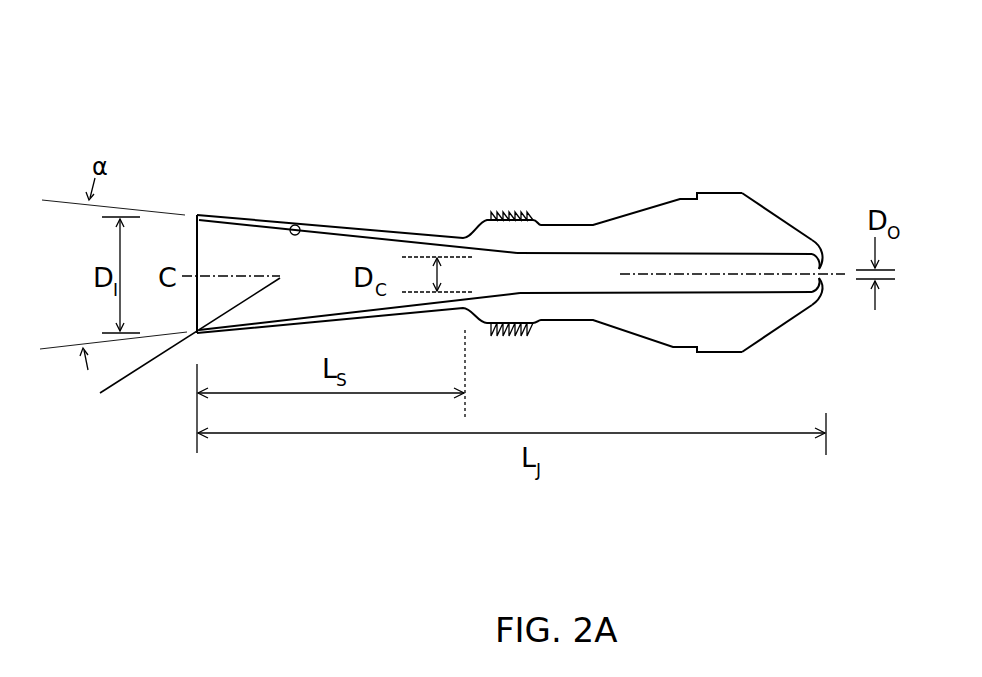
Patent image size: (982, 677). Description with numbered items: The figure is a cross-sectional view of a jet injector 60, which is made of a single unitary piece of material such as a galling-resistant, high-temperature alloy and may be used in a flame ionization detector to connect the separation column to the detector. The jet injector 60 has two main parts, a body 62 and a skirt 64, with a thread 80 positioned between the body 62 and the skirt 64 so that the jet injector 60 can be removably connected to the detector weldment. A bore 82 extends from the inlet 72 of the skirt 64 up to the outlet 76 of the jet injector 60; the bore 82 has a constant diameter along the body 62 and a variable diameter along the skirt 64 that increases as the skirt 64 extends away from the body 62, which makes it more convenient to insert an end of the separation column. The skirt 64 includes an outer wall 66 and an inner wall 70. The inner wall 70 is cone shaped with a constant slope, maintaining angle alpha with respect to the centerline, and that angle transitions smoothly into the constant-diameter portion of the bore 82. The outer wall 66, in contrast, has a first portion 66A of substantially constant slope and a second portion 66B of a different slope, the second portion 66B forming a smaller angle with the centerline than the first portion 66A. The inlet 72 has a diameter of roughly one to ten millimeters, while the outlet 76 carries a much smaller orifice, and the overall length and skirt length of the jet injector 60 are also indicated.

The jet injector 60 is at (702, 169).
The body 62 is at (758, 200).
The skirt 64 is at (398, 164).
The outer wall 66 is at (350, 205).
The first portion 66A is at (400, 228).
The second portion 66B is at (227, 213).
The inner wall 70 is at (294, 224).
The inlet 72 is at (185, 233).
The outlet 76 is at (823, 276).
The thread 80 is at (518, 220).
The bore 82 is at (172, 353).